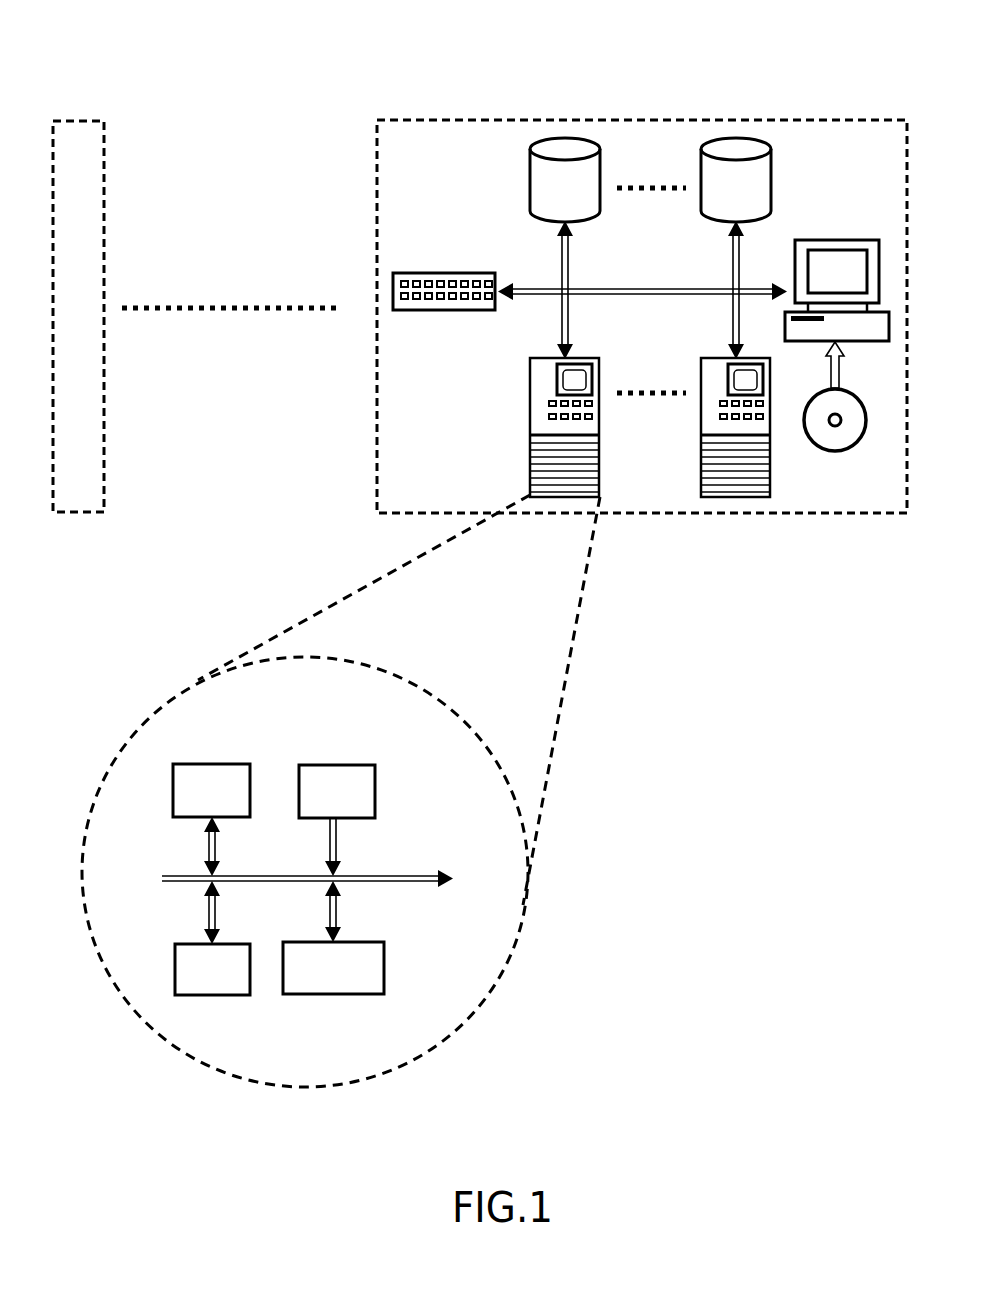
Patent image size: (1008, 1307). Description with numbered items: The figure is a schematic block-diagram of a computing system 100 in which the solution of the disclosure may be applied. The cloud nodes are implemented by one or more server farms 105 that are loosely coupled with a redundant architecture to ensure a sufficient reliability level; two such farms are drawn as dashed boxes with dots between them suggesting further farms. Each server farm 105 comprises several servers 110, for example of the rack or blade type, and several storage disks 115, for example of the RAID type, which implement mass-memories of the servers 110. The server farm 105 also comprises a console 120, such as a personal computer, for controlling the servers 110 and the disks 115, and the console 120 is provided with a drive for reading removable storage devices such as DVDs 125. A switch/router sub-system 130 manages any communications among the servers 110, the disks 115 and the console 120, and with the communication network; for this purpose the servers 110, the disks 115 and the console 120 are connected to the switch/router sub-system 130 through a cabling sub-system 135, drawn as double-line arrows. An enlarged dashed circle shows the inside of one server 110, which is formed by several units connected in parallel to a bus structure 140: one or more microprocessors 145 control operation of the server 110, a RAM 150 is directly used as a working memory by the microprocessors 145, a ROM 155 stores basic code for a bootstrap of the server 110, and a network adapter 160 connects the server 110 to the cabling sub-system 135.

The computing system 100 is at (480, 260).
The server farm 105 is at (480, 294).
The server 110 is at (610, 427).
The storage disk 115 is at (609, 180).
The console 120 is at (839, 268).
The DVD 125 is at (851, 421).
The switch/router sub-system 130 is at (444, 269).
The cabling sub-system 135 is at (642, 274).
The bus structure 140 is at (331, 895).
The microprocessor 145 is at (236, 776).
The RAM 150 is at (224, 996).
The ROM 155 is at (362, 776).
The network adapter 160 is at (346, 995).